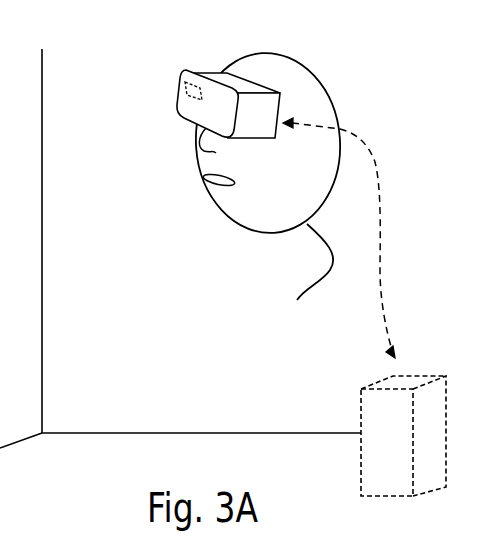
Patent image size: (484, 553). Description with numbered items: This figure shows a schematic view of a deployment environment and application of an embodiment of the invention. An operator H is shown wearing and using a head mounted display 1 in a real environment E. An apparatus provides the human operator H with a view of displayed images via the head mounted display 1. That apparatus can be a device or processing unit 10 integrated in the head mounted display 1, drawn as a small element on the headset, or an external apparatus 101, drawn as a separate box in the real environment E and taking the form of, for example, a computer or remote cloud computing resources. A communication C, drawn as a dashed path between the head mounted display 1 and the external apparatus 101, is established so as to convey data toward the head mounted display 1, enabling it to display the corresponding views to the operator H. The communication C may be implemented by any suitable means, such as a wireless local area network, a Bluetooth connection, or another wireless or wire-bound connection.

The head mounted display 1 is at (193, 77).
The processing unit 10 is at (180, 85).
The operator H is at (308, 68).
The communication C is at (365, 142).
The real environment E is at (180, 248).
The external apparatus 101 is at (410, 376).